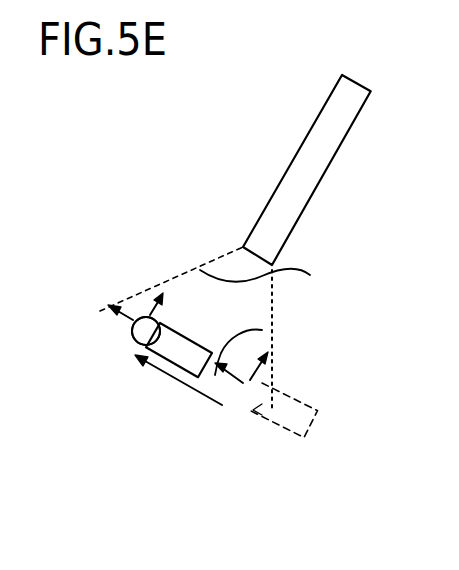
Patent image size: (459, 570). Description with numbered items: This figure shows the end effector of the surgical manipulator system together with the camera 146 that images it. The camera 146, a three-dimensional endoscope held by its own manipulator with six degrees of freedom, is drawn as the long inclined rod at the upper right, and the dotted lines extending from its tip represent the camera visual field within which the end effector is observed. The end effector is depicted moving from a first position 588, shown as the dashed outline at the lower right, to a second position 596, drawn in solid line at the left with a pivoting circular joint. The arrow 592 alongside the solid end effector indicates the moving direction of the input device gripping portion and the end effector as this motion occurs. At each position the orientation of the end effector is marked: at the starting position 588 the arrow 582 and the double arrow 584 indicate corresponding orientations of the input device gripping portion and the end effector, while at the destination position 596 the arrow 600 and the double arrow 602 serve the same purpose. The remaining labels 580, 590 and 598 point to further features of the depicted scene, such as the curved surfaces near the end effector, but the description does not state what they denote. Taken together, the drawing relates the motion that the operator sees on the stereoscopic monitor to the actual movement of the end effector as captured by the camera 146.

The camera 146 is at (317, 147).
The contact surface 580 is at (272, 282).
The arrow 582 is at (262, 330).
The double arrow 584 is at (270, 354).
The position 588 is at (247, 398).
The movement direction arrow 590 is at (231, 383).
The arrow 592 is at (172, 381).
The position 596 is at (134, 342).
The pivot joint 598 is at (132, 326).
The arrow 600 is at (116, 313).
The double arrow 602 is at (158, 295).